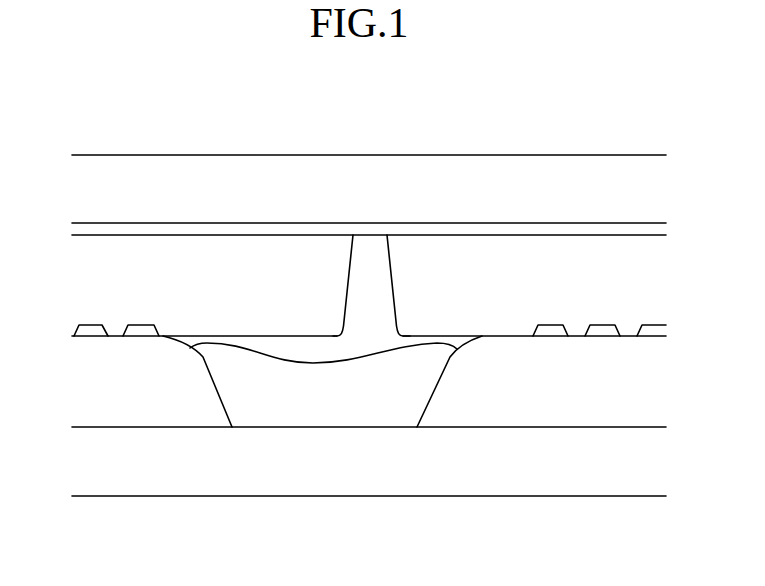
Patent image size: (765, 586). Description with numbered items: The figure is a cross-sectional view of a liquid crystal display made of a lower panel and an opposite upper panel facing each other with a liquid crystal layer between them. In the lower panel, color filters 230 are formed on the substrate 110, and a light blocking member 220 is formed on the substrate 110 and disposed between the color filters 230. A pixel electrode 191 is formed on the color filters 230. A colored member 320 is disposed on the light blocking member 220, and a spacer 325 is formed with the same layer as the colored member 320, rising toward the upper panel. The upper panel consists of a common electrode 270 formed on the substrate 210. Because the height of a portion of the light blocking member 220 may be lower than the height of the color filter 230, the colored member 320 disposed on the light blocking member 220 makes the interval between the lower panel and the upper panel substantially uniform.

The substrate 110 is at (458, 480).
The pixel electrode 191 is at (141, 330).
The substrate 210 is at (318, 168).
The light blocking member 220 is at (322, 391).
The color filters 230 is at (135, 391).
The common electrode 270 is at (417, 227).
The colored member 320 is at (275, 350).
The spacer 325 is at (378, 276).